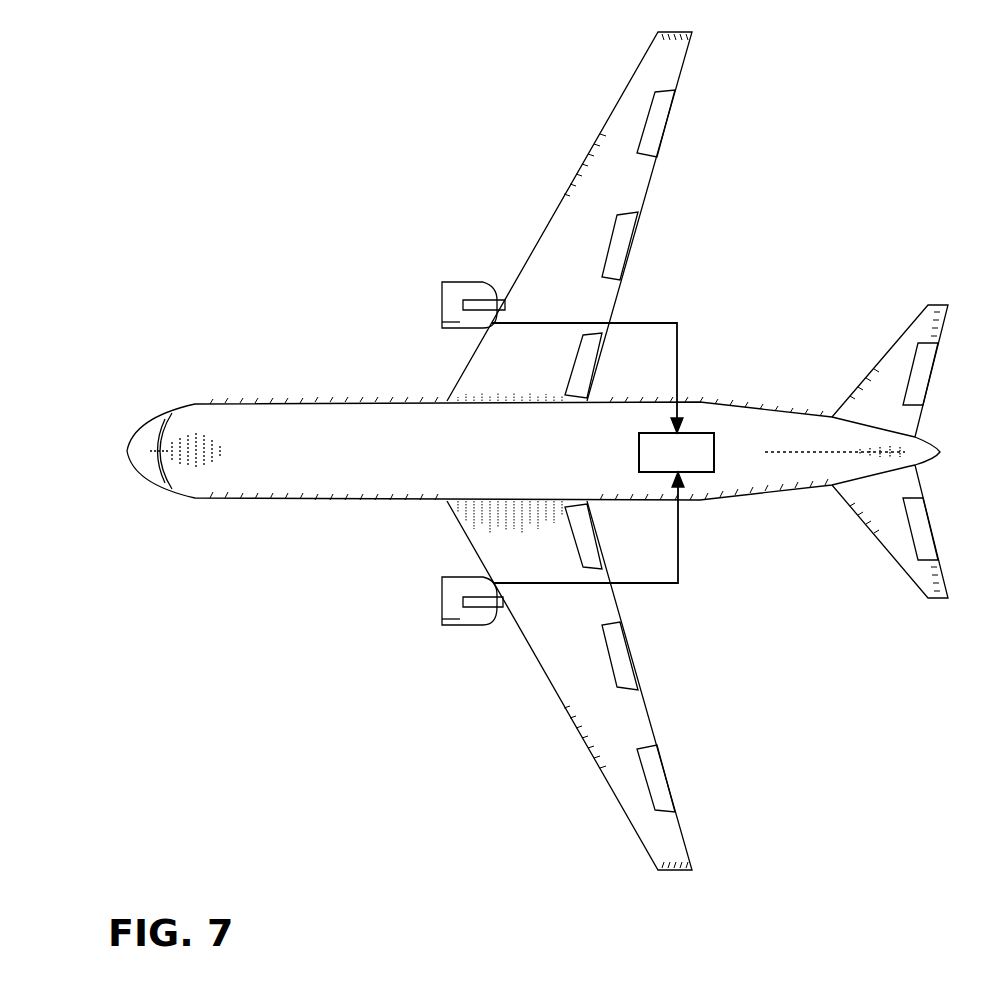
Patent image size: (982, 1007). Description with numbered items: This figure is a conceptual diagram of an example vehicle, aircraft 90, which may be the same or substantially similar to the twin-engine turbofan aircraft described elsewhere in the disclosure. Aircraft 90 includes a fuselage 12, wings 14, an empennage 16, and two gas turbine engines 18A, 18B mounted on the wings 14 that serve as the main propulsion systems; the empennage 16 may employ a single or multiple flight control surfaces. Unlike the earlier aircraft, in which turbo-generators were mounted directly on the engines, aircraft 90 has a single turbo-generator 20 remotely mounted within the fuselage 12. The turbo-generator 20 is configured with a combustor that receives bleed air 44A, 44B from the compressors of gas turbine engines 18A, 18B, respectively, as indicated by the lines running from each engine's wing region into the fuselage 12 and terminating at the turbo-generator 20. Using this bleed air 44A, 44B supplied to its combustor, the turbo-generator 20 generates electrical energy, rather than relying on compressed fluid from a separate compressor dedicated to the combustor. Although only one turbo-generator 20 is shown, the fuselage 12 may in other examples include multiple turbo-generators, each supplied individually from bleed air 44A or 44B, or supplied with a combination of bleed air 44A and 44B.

The aircraft 90 is at (309, 167).
The fuselage 12 is at (548, 464).
The wings 14 is at (564, 322).
The empennage 16 is at (803, 528).
The gas turbine engine 18A is at (462, 282).
The gas turbine engine 18B is at (462, 625).
The turbo-generator 20 is at (676, 452).
The bleed air 44A is at (638, 323).
The bleed air 44B is at (648, 583).